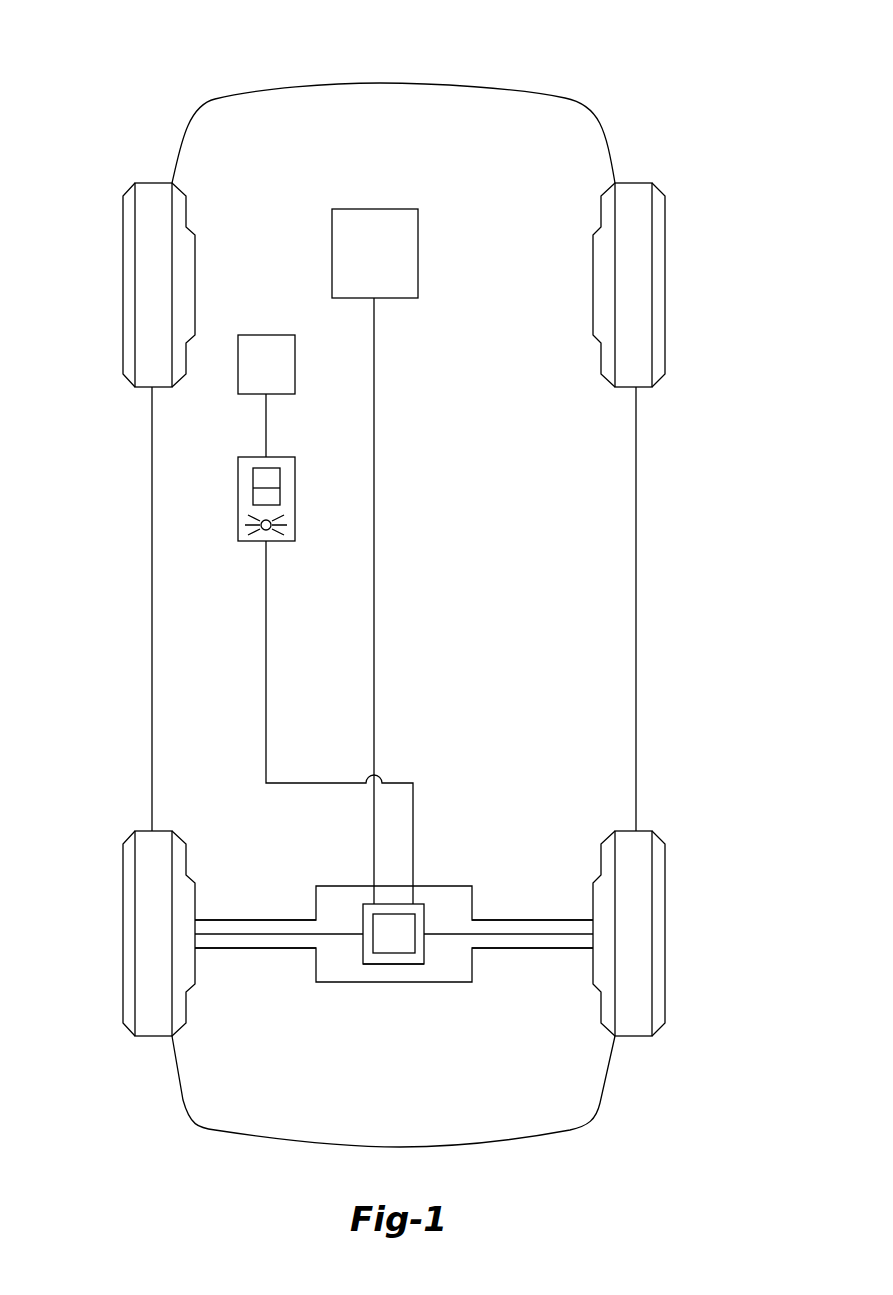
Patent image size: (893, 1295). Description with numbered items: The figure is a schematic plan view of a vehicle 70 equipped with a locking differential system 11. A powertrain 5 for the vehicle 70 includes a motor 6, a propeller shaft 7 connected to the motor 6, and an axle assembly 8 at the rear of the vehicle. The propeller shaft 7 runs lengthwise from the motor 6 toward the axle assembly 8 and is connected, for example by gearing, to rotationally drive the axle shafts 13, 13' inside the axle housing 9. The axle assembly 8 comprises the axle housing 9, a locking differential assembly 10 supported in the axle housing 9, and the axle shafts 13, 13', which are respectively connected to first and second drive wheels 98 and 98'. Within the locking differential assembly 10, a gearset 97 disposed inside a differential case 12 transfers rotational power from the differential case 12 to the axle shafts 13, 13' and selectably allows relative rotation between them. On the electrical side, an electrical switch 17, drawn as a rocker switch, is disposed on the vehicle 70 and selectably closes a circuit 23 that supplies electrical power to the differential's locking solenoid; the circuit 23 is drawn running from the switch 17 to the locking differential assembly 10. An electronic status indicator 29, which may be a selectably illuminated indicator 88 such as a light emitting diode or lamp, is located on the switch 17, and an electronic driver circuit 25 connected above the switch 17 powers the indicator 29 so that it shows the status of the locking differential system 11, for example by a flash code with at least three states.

The vehicle 70 is at (398, 581).
The locking differential system 11 is at (293, 80).
The powertrain 5 is at (405, 235).
The motor 6 is at (389, 265).
The propeller shaft 7 is at (374, 457).
The electronic driver circuit 25 is at (281, 378).
The electrical switch 17 is at (270, 517).
The electronic status indicator 29 is at (307, 546).
The selectably illuminated indicator 88 is at (270, 529).
The circuit 23 is at (266, 648).
The axle assembly 8 is at (480, 895).
The axle shaft 13 is at (255, 912).
The axle shaft 13' is at (532, 912).
The axle housing 9 is at (300, 949).
The locking differential assembly 10 is at (421, 900).
The differential case 12 is at (402, 954).
The gearset 97 is at (378, 965).
The first drive wheel 98 is at (130, 933).
The second drive wheel 98' is at (662, 933).